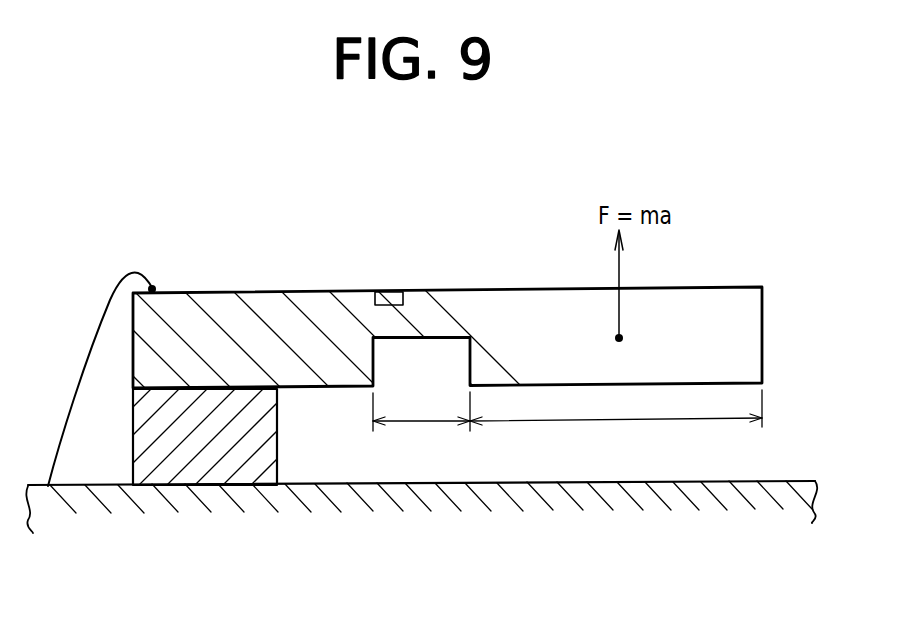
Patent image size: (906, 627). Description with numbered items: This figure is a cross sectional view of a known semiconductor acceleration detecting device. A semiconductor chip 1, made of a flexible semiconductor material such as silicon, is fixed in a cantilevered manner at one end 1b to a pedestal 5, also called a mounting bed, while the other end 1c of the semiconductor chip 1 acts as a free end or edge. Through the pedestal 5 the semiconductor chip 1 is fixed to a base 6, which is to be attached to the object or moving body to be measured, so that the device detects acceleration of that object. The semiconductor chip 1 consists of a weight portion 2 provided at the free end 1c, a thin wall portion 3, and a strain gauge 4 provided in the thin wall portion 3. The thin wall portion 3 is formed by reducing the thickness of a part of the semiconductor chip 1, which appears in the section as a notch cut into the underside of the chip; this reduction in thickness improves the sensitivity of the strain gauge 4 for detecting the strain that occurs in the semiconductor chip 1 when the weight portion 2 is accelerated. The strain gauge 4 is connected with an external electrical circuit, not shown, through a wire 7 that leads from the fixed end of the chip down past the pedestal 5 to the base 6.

The semiconductor chip 1 is at (323, 313).
The end 1b is at (235, 318).
The other end 1c is at (732, 312).
The weight portion 2 is at (607, 422).
The thin wall portion 3 is at (418, 423).
The strain gauge 4 is at (391, 291).
The pedestal 5 is at (255, 438).
The base 6 is at (707, 496).
The wire 7 is at (110, 293).